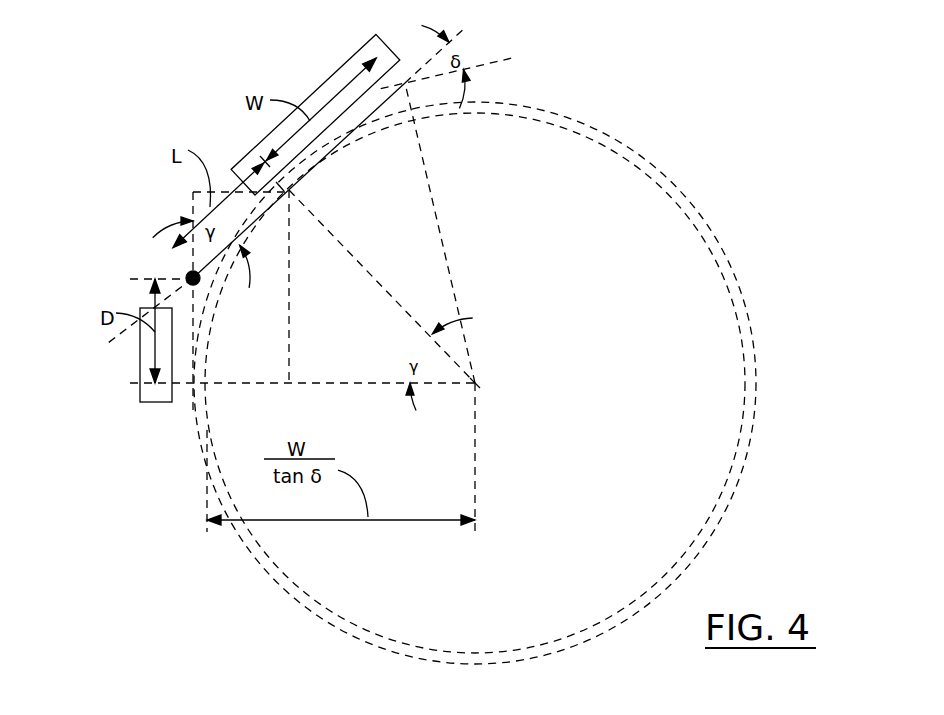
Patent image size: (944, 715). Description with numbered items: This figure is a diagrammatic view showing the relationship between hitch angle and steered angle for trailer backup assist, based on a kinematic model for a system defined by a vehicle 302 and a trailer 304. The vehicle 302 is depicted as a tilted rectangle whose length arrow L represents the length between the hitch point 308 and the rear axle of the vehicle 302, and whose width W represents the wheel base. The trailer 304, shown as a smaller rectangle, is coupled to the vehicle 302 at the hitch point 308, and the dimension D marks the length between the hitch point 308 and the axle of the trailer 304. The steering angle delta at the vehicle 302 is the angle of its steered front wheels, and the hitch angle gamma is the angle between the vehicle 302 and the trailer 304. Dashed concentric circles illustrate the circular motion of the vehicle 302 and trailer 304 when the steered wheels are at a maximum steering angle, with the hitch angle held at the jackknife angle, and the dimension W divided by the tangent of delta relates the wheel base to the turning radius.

The vehicle 302 is at (340, 66).
The trailer 304 is at (140, 350).
The hitch point 308 is at (186, 274).